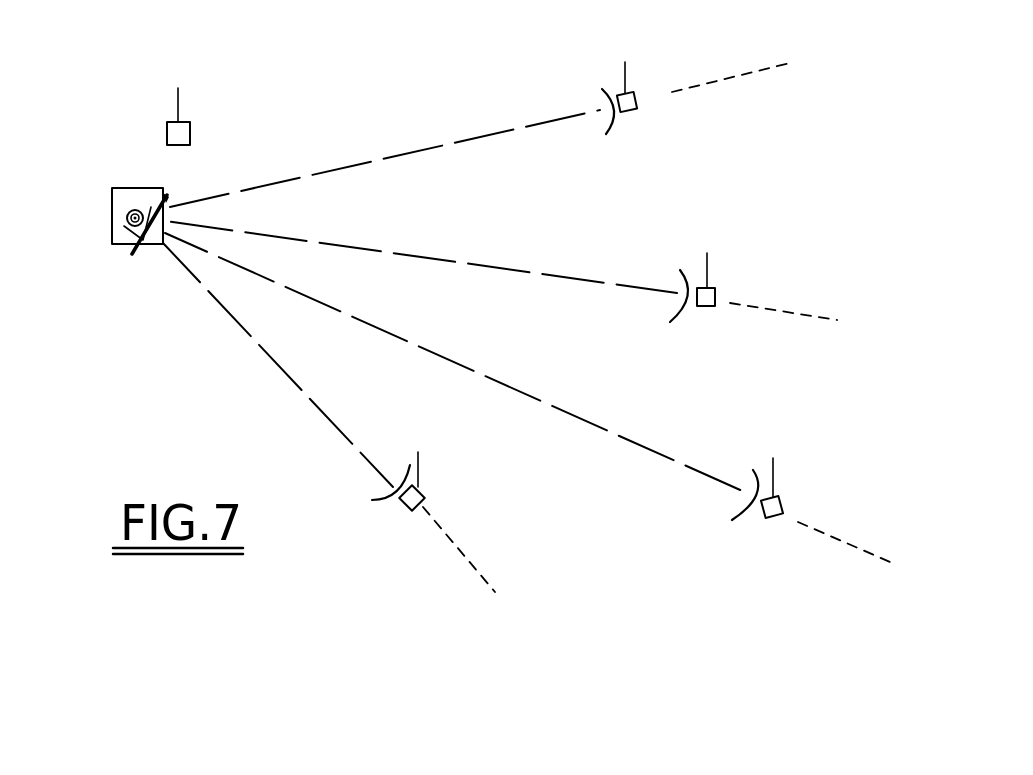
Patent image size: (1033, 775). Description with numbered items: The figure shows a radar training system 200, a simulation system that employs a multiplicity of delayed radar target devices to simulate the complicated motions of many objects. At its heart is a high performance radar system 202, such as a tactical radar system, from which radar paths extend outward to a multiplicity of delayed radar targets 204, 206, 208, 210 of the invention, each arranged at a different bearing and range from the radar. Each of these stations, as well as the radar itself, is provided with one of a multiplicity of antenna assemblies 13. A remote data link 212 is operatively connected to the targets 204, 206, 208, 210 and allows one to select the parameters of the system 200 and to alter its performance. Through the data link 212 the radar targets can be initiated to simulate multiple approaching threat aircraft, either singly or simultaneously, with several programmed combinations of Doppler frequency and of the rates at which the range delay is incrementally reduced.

The radar training system 200 is at (387, 68).
The high performance radar system 202 is at (142, 264).
The delayed radar target 204 is at (603, 95).
The delayed radar target 206 is at (680, 313).
The delayed radar target 208 is at (747, 507).
The delayed radar target 210 is at (382, 498).
The remote data link 212 is at (117, 217).
The antenna assembly 13 is at (203, 114).